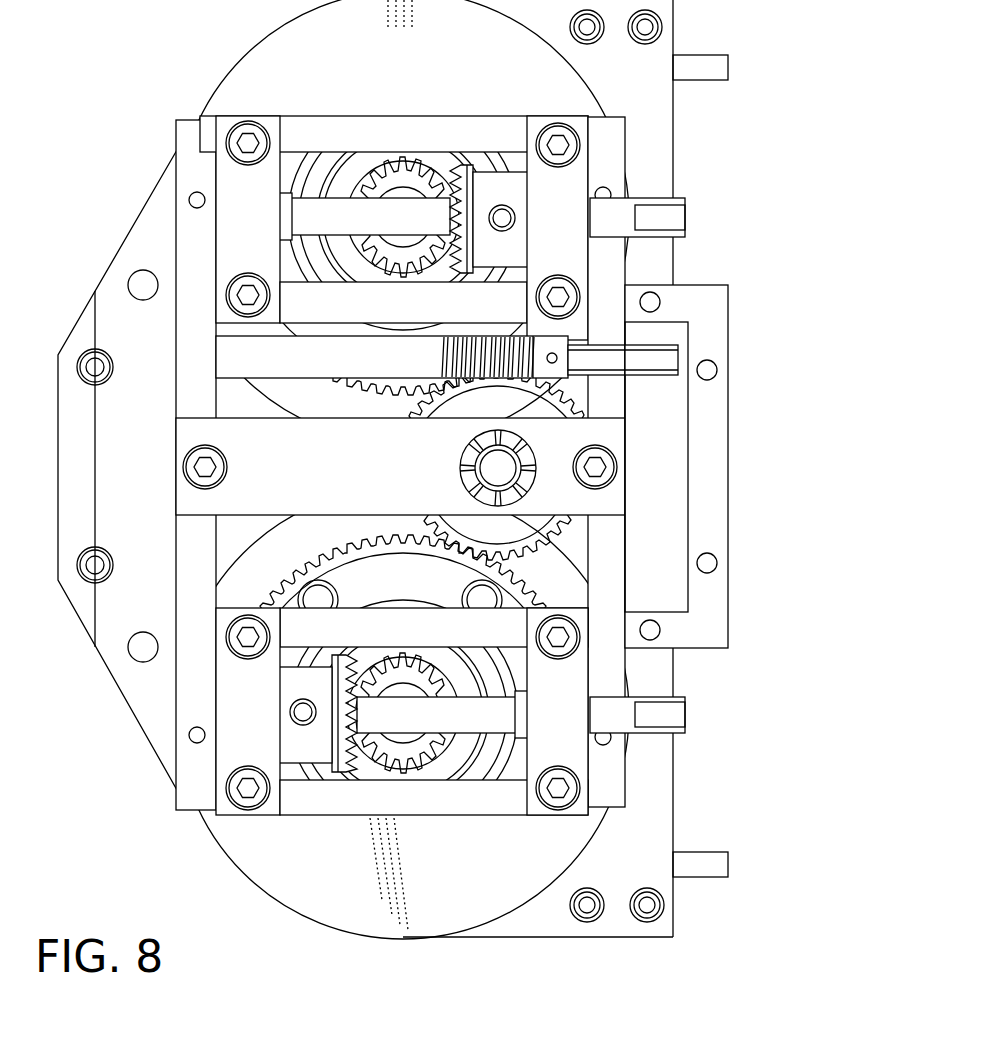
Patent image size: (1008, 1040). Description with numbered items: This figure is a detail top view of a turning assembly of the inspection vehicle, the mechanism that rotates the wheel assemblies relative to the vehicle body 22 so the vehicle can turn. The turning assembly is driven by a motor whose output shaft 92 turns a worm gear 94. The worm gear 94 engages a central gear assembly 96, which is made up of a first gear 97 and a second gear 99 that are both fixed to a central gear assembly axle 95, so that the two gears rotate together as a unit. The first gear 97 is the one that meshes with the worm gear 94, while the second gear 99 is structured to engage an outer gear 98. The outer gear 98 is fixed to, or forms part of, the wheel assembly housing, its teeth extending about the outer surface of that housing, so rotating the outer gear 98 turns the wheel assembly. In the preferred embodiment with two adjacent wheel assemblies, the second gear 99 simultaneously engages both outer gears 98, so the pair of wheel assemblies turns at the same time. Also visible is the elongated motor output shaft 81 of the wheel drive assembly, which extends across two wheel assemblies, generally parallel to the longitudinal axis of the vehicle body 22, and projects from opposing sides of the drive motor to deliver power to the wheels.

The vehicle body 22 is at (133, 252).
The motor output shaft 81 is at (685, 203).
The output shaft 92 is at (667, 350).
The worm gear 94 is at (535, 333).
The central gear assembly axle 95 is at (510, 470).
The central gear assembly 96 is at (480, 407).
The first gear 97 is at (485, 530).
The outer gear 98 is at (328, 556).
The second gear 99 is at (430, 402).